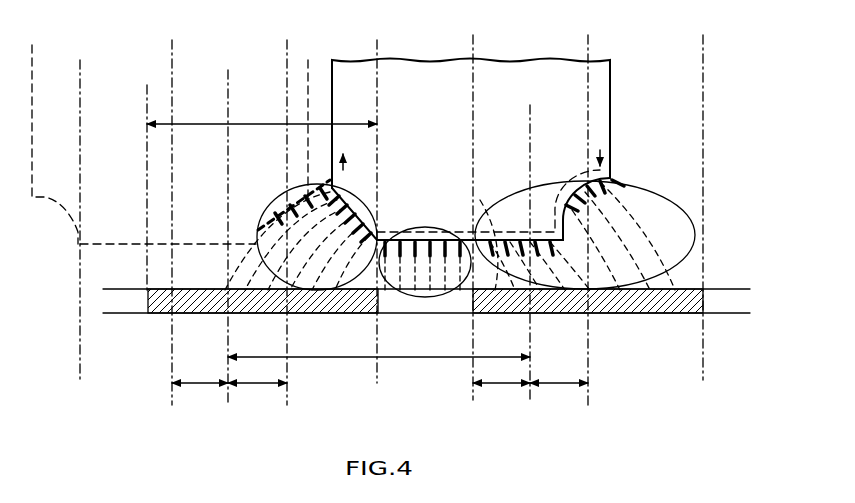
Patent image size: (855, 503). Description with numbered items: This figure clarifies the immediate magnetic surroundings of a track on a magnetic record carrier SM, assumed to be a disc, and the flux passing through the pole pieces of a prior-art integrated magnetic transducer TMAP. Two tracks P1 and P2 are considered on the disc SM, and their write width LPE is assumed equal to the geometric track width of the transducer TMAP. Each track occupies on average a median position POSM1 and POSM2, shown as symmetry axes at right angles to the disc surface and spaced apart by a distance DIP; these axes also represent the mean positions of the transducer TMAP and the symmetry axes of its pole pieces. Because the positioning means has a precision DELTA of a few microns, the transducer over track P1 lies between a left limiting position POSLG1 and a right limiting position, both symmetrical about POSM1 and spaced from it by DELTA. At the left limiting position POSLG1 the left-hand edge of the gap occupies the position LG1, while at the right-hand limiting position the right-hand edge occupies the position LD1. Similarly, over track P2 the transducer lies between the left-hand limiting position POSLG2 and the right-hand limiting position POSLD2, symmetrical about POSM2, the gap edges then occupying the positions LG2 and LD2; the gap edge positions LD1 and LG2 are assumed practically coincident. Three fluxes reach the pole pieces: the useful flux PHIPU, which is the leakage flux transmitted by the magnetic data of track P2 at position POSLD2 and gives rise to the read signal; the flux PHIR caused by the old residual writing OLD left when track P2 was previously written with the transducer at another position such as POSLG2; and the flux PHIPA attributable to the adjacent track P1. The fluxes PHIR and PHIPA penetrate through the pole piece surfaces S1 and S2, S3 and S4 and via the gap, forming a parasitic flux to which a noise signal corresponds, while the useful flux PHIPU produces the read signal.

The left-hand gap edge position LG1 is at (80, 58).
The left limiting position POSLG1 is at (172, 58).
The median position of track P1 POSM1 is at (228, 118).
The right limiting position for track P2 POSLD2 is at (287, 58).
The left-hand gap edge position for track P2 LG2 is at (377, 62).
The right-hand gap edge position for track P1 LD1 is at (377, 100).
The left limiting position for track P2 POSLG2 is at (473, 58).
The median position of track P2 POSM2 is at (530, 120).
The right-hand gap edge position for track P2 LD2 is at (703, 58).
The integrated magnetic transducer TMAP is at (610, 75).
The adjacent-track flux PHIPA is at (285, 183).
The useful flux PHIPU is at (645, 180).
The residual flux PHIR is at (425, 313).
The pole piece surface S4 is at (471, 158).
The pole piece surface S3 is at (461, 179).
The pole piece surface S2 is at (399, 207).
The pole piece surface S1 is at (458, 217).
The magnetic record carrier SM is at (110, 316).
The track P1 is at (172, 316).
The track P2 is at (590, 316).
The old residual writing OLD is at (465, 313).
The write width LPE is at (262, 109).
The inter-track distance DIP is at (379, 343).
The positioning precision DELTA is at (380, 371).